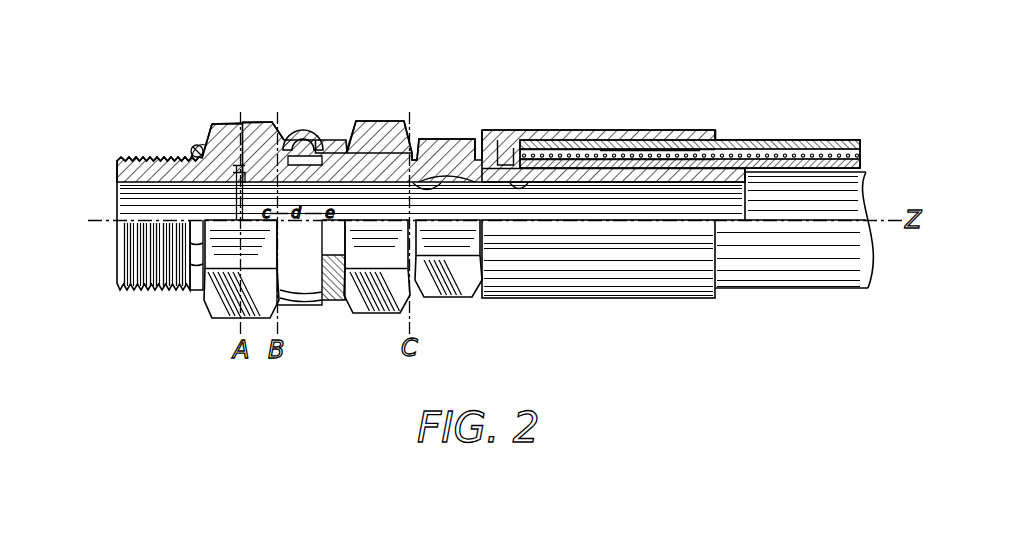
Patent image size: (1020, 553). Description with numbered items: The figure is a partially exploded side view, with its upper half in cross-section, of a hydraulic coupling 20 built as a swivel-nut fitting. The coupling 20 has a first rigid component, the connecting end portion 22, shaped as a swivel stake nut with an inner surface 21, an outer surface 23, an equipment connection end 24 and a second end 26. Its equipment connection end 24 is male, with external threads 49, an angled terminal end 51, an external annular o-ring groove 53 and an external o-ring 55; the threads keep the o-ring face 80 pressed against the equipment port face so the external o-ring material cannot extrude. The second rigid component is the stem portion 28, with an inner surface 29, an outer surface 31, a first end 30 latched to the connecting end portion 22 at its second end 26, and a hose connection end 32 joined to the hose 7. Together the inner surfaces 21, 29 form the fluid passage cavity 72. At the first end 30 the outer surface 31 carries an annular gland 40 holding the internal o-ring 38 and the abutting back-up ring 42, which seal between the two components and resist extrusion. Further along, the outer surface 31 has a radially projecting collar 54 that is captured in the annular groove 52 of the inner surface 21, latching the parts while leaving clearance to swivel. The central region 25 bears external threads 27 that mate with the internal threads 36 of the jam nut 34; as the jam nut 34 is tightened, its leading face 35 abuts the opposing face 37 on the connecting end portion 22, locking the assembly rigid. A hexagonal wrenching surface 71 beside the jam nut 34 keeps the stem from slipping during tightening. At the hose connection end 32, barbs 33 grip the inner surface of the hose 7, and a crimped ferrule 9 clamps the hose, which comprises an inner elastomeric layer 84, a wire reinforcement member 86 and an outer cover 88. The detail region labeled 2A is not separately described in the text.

The hose 7 is at (828, 292).
The ferrule 9 is at (612, 299).
The coupling 20 is at (376, 64).
The inner surface 21 is at (145, 184).
The connecting end portion 22 is at (240, 163).
The outer surface 23 is at (224, 121).
The equipment connection end 24 is at (116, 170).
The central region 25 is at (717, 109).
The second end 26 is at (328, 143).
The external threads 27 is at (500, 163).
The stem portion 28 is at (486, 138).
The inner surface 29 is at (548, 133).
The first end 30 is at (300, 133).
The outer surface 31 is at (433, 143).
The hose connection end 32 is at (708, 138).
The barbs 33 is at (652, 138).
The jam nut 34 is at (420, 146).
The leading face 35 is at (336, 158).
The internal threads 36 is at (408, 133).
The opposing face 37 is at (382, 123).
The internal o-ring 38 is at (220, 148).
The annular gland 40 is at (207, 291).
The back-up ring 42 is at (243, 180).
The external threads 49 is at (140, 290).
The angled terminal end 51 is at (119, 158).
The annular groove 52 is at (246, 213).
The external annular o-ring groove 53 is at (182, 178).
The collar 54 is at (360, 272).
The external o-ring 55 is at (195, 150).
The wrenching surface 71 is at (458, 286).
The fluid passage cavity 72 is at (605, 158).
The o-ring face 80 is at (199, 146).
The inner elastomeric layer 84 is at (862, 165).
The reinforcement member 86 is at (862, 156).
The cover 88 is at (857, 146).
The section line 2A is at (240, 187).